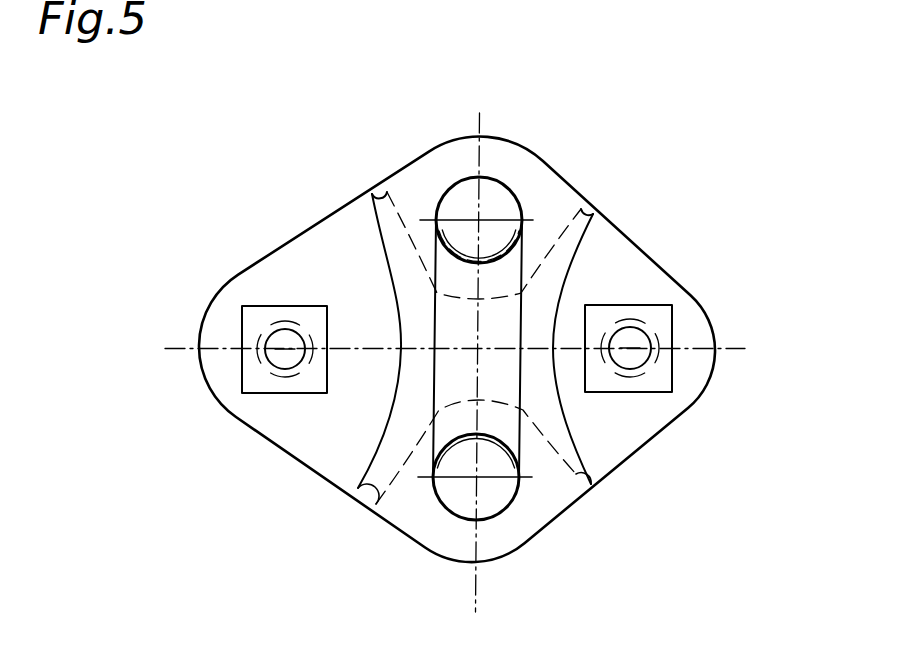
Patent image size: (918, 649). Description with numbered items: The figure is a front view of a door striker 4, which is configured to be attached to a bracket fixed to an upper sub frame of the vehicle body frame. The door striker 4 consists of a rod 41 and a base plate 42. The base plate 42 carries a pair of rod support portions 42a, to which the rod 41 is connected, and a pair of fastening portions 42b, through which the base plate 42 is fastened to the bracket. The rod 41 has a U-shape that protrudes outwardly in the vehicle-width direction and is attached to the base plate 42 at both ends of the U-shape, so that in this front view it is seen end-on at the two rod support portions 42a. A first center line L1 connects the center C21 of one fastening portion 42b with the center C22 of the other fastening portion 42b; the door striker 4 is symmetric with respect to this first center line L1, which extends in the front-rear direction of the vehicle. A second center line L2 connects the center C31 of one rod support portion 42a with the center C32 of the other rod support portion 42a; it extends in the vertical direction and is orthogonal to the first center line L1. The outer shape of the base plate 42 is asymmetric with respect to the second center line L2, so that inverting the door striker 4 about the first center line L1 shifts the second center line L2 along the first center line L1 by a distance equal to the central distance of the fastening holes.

The door striker 4 is at (633, 82).
The rod 41 is at (497, 313).
The base plate 42 is at (567, 202).
The rod support portion 42a is at (452, 188).
The fastening portion 42b is at (283, 351).
The center of one rod support portion C31 is at (479, 220).
The center of the other rod support portion C32 is at (474, 478).
The center of one fastening portion C21 is at (285, 349).
The center of the other fastening portion C22 is at (626, 349).
The first center line L1 is at (475, 350).
The second center line L2 is at (479, 348).